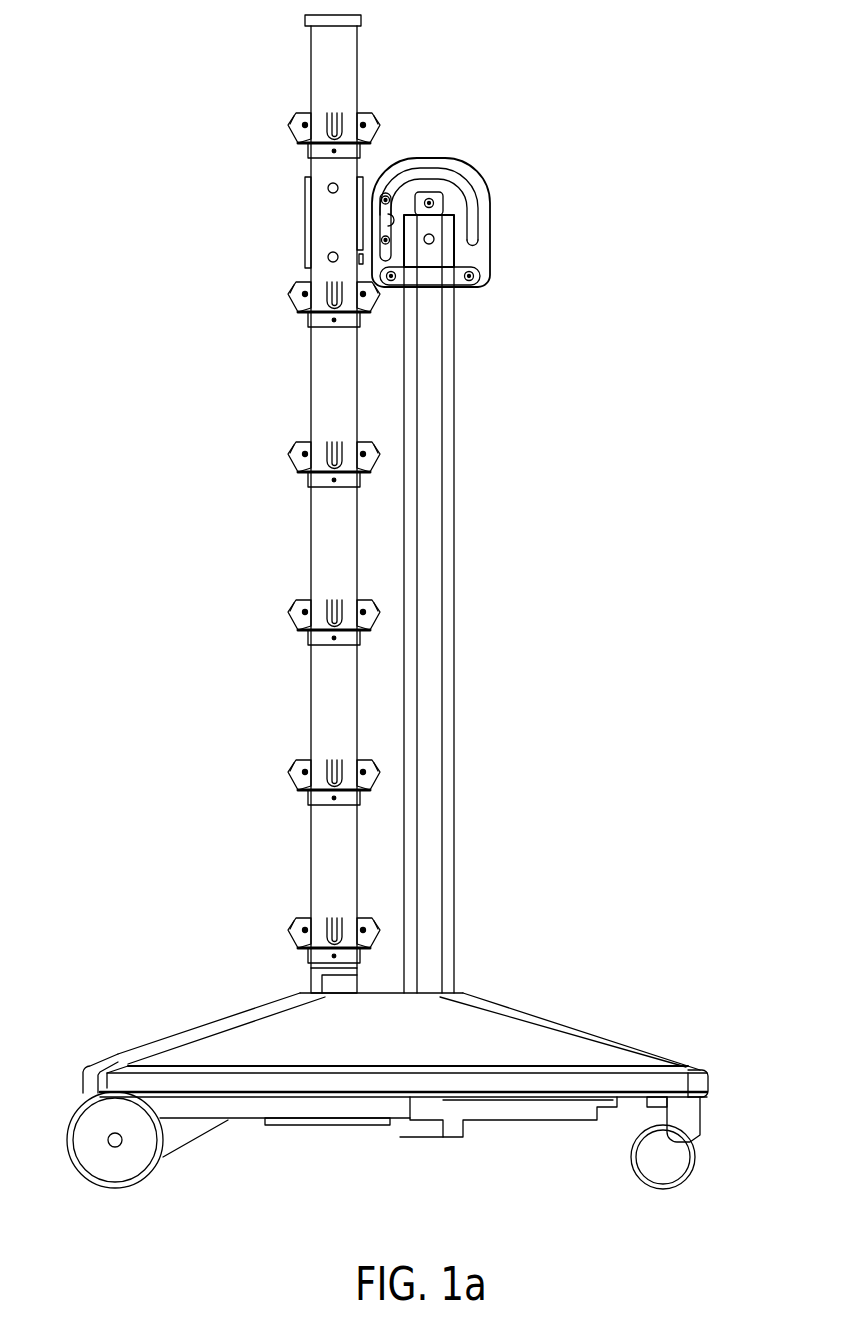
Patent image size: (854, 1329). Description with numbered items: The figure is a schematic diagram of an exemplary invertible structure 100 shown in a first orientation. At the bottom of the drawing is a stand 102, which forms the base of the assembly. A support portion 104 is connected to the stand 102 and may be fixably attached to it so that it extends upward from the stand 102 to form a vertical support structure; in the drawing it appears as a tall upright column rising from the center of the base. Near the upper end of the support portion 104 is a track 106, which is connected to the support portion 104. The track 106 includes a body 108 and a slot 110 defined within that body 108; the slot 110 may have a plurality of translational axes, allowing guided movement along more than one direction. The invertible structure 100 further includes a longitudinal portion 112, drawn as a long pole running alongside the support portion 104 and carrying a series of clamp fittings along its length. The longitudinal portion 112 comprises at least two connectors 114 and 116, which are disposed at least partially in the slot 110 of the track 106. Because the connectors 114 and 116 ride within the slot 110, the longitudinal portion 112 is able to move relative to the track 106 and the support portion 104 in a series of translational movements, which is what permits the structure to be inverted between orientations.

The invertible structure 100 is at (526, 552).
The stand 102 is at (520, 1042).
The support portion 104 is at (428, 451).
The track 106 is at (464, 134).
The body 108 is at (472, 252).
The slot 110 is at (467, 195).
The longitudinal portion 112 is at (327, 67).
The connector 114 is at (385, 199).
The connector 116 is at (385, 239).